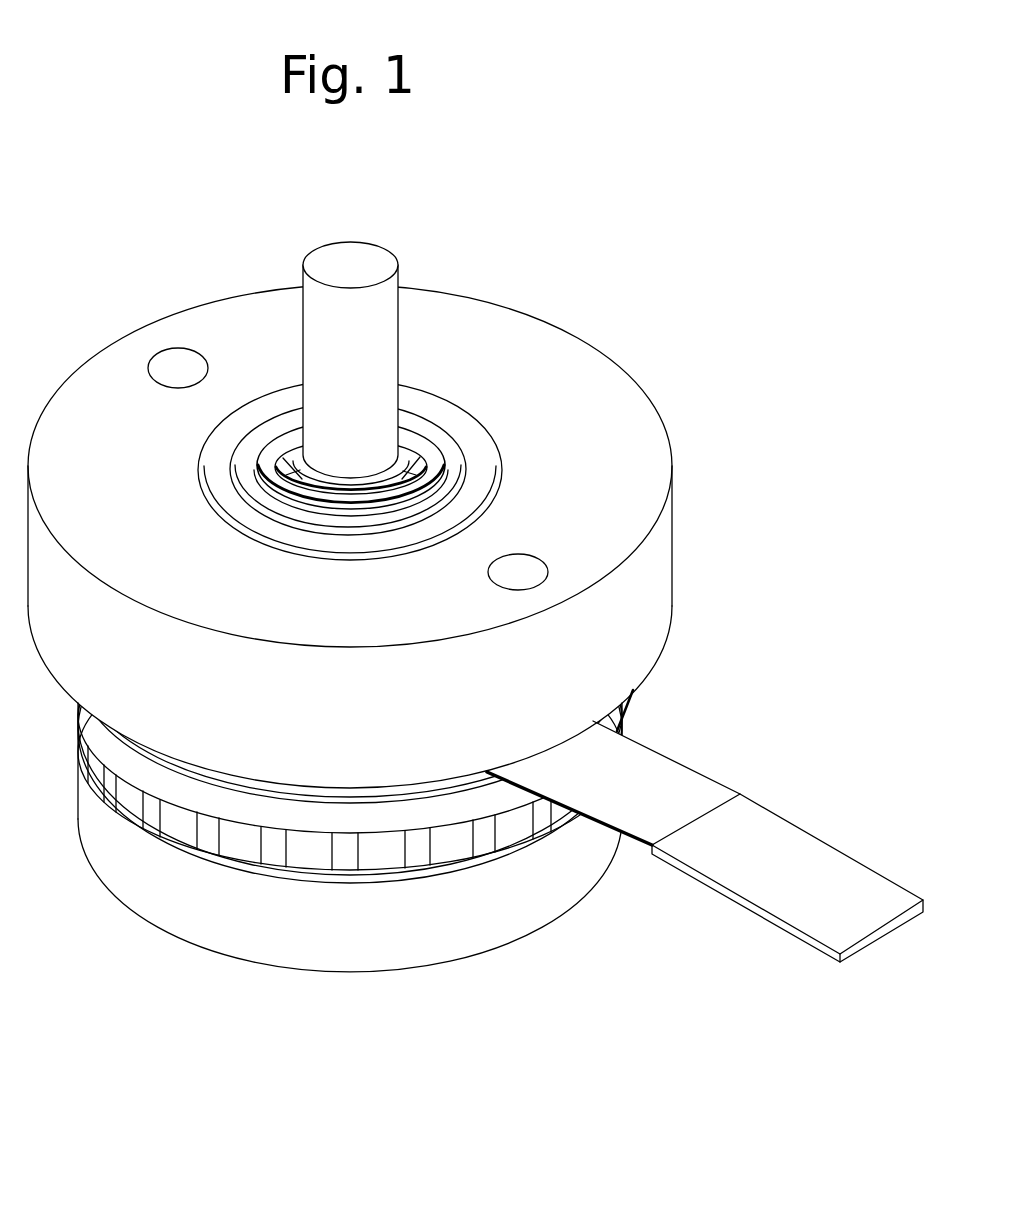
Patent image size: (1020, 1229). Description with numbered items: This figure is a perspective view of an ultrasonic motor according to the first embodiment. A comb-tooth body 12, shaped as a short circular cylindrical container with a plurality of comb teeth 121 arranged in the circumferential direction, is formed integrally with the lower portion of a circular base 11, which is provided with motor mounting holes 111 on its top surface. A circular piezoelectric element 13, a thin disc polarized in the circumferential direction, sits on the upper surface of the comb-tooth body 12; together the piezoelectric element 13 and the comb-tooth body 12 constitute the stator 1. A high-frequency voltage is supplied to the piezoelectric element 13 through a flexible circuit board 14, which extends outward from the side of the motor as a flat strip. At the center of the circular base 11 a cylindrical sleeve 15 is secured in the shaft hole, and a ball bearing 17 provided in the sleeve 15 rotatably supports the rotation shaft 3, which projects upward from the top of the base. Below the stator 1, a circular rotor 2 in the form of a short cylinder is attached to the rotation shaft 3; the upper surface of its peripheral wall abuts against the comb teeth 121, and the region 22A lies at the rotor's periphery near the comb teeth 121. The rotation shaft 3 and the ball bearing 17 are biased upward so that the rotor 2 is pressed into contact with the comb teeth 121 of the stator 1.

The stator 1 is at (660, 616).
The rotor 2 is at (463, 943).
The rotation shaft 3 is at (388, 282).
The circular base 11 is at (632, 527).
The comb-tooth body 12 is at (165, 780).
The piezoelectric element 13 is at (476, 785).
The flexible circuit board 14 is at (683, 793).
The sleeve 15 is at (266, 402).
The ball bearing 17 is at (425, 450).
The stator pole tip 22A is at (413, 857).
The motor mounting holes 111 is at (152, 372).
The comb teeth 121 is at (308, 855).